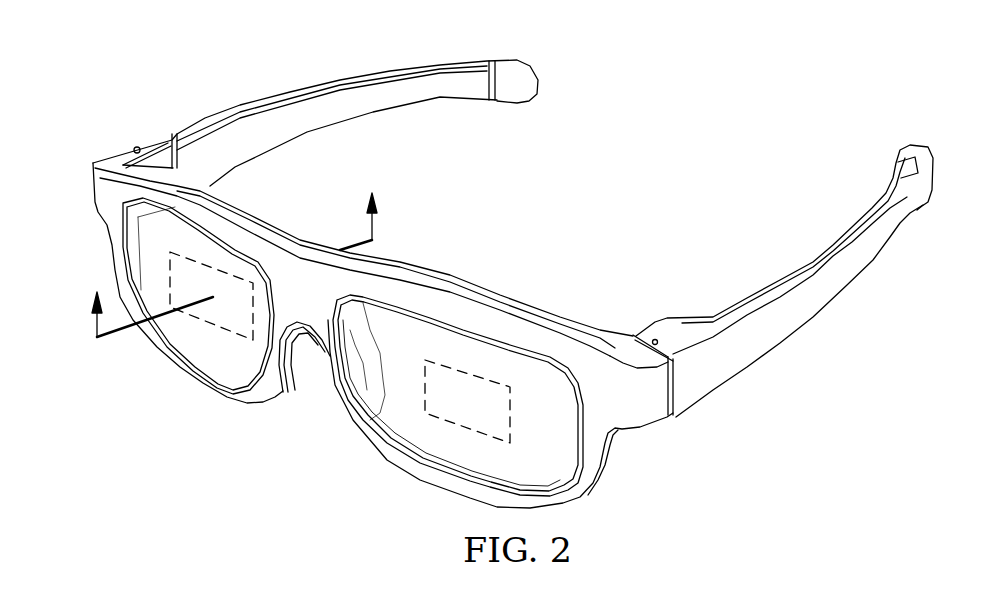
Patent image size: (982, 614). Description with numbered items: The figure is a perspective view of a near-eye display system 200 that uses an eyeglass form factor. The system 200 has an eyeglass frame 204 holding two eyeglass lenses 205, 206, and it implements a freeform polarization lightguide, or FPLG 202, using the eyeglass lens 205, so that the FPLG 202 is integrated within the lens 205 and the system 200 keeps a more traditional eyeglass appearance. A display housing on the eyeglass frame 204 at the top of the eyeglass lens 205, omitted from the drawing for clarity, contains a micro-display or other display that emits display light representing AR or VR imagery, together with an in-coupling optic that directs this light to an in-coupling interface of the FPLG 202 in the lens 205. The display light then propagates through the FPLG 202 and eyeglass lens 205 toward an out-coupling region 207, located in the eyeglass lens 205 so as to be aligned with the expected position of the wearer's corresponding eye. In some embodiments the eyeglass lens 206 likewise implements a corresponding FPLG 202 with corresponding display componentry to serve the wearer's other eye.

The near-eye display system 200 is at (188, 66).
The FPLG 202 is at (158, 237).
The eyeglass frame 204 is at (316, 220).
The eyeglass lens 205 is at (238, 352).
The eyeglass lens 206 is at (425, 435).
The out-coupling region 207 is at (168, 285).